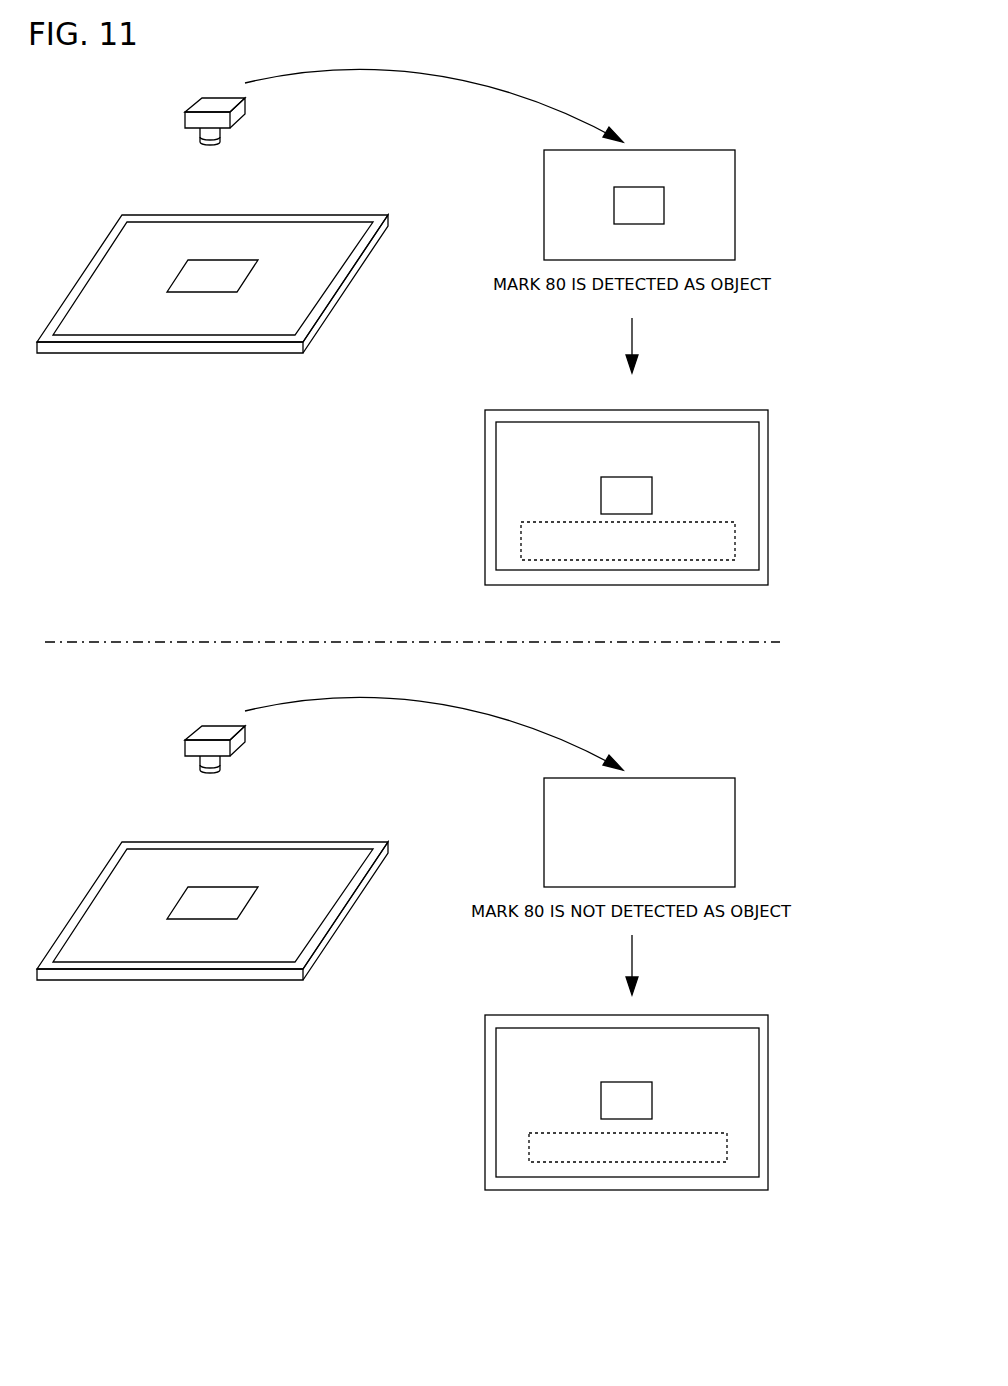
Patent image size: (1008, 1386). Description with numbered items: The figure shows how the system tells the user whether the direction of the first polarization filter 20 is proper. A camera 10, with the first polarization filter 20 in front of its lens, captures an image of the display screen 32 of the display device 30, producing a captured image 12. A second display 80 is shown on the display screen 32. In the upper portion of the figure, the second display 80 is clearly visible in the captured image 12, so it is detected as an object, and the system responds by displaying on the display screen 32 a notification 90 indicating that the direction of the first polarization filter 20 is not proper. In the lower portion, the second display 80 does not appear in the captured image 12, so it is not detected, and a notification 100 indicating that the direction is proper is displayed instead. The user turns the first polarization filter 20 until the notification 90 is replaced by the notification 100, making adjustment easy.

The camera 10 is at (212, 98).
The first polarization filter 20 is at (220, 142).
The display device 30 is at (265, 353).
The display screen 32 is at (710, 422).
The captured image 12 is at (690, 150).
The second display 80 is at (207, 292).
The notification 90 is at (623, 560).
The notification 100 is at (623, 1162).